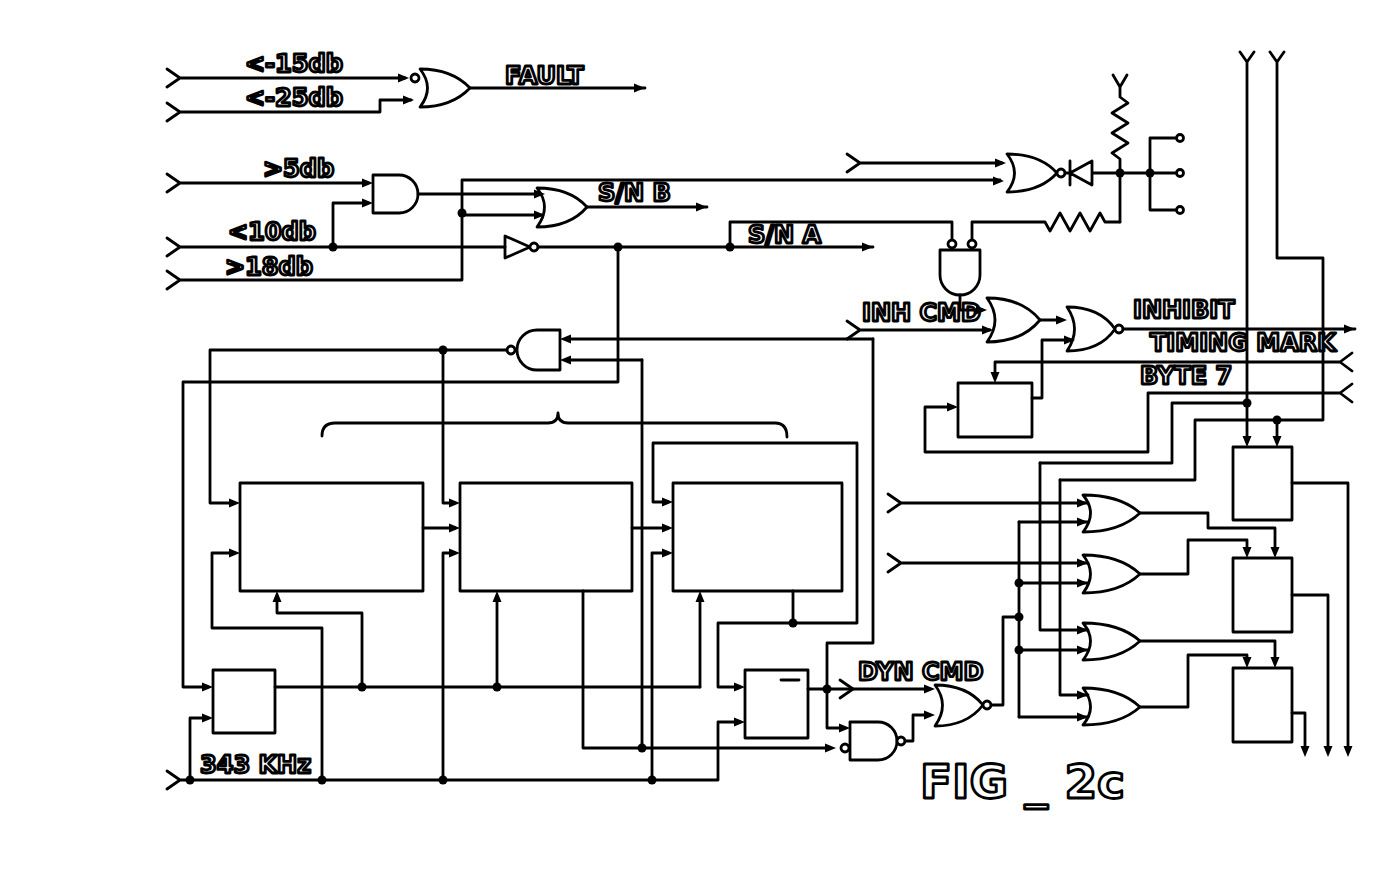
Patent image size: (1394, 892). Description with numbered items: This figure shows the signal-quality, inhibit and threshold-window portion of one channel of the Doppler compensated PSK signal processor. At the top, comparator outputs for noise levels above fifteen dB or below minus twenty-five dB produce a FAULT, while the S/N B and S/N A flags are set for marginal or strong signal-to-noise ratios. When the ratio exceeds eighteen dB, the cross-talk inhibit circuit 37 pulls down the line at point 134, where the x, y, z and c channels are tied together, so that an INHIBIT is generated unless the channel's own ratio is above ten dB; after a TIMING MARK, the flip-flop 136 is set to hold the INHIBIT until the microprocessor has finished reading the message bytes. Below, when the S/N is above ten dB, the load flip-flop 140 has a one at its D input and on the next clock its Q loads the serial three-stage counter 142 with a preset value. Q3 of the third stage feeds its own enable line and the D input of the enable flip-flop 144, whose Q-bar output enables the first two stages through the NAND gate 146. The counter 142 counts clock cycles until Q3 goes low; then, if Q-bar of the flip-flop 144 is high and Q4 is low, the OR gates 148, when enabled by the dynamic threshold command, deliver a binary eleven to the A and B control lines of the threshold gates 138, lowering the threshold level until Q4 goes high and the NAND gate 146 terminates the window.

The cross-talk inhibit circuit 37 is at (1042, 150).
The point where all four channels are tied together 134 is at (1130, 165).
The flip-flop 136 is at (960, 382).
The threshold gates 138 is at (1268, 745).
The load flip-flop 140 is at (240, 670).
The serial three-stage counter 142 is at (556, 412).
The enable flip-flop 144 is at (765, 672).
The NAND gate 146 is at (541, 330).
The OR gates 148 is at (1133, 728).